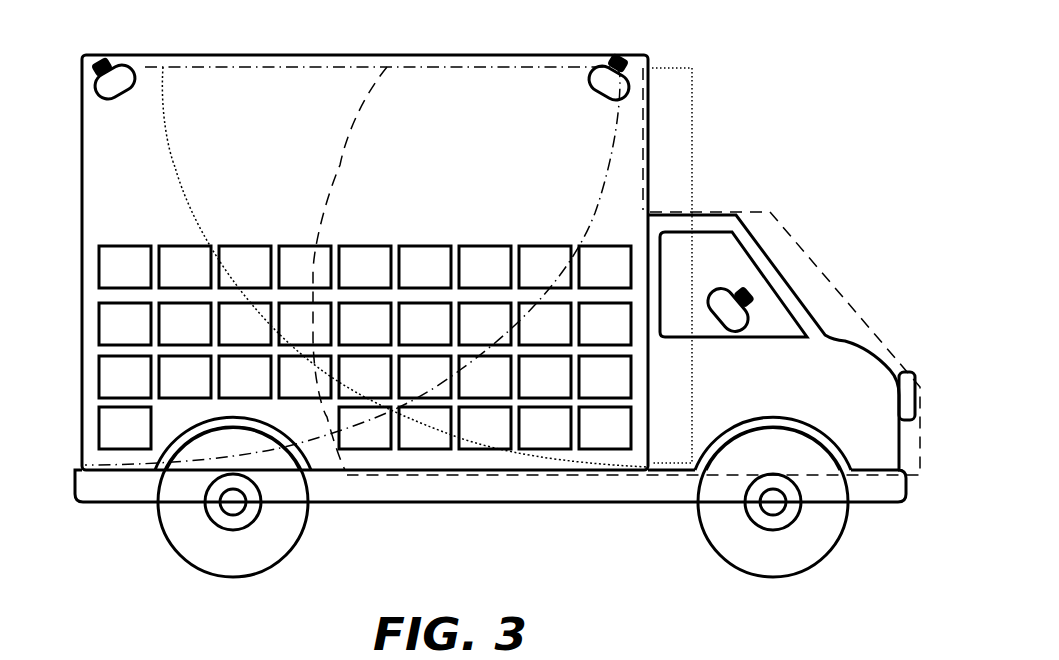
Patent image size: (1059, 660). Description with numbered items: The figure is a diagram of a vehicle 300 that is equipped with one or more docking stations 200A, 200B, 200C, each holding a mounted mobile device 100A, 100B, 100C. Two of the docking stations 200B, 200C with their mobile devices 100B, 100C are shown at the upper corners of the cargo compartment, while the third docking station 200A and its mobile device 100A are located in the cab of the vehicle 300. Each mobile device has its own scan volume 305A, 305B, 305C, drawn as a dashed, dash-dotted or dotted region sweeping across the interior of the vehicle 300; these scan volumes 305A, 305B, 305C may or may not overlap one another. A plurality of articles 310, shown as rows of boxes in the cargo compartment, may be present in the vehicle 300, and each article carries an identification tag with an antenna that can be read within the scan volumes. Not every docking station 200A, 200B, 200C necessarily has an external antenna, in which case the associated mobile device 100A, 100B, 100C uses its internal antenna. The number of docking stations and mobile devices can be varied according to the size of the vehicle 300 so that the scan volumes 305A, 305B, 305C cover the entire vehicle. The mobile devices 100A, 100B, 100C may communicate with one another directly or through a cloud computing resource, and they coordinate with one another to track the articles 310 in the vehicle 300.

The vehicle 300 is at (762, 52).
The articles 310 is at (64, 331).
The mobile device 100A is at (718, 297).
The mobile device 100B is at (98, 96).
The mobile device 100C is at (630, 90).
The docking station 200A is at (753, 295).
The docking station 200B is at (92, 66).
The docking station 200C is at (633, 57).
The scan volume 305A is at (335, 190).
The scan volume 305B is at (592, 210).
The scan volume 305C is at (173, 163).